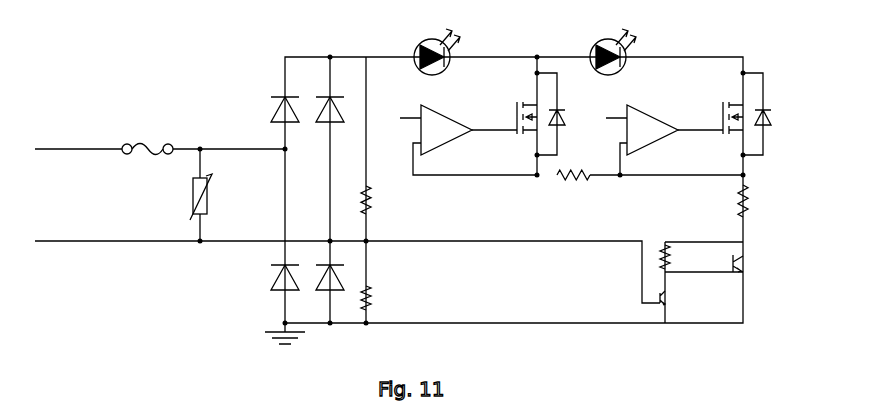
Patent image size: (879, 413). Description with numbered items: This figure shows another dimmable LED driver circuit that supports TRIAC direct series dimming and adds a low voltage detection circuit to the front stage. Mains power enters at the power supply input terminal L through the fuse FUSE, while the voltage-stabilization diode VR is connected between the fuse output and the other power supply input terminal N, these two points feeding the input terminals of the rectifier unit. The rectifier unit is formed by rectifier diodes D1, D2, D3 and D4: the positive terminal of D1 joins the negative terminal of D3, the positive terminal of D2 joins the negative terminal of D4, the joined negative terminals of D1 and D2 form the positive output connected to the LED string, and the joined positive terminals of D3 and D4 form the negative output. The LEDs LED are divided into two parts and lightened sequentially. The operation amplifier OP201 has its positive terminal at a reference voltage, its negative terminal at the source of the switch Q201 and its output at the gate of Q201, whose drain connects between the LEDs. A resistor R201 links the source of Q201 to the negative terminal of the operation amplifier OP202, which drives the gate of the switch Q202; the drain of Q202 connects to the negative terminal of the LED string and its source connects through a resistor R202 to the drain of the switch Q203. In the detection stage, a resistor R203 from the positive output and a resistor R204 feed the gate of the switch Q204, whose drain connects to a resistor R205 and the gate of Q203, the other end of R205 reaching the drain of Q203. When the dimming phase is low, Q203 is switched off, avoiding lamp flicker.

The power supply input terminal L is at (149, 149).
The power supply input terminal N is at (337, 268).
The fuse FUSE is at (147, 164).
The voltage-stabilization diode VR is at (214, 195).
The rectifier diode D1 is at (276, 103).
The rectifier diode D2 is at (324, 103).
The rectifier diode D3 is at (274, 270).
The rectifier diode D4 is at (322, 270).
The resistor R201 is at (572, 185).
The resistor R202 is at (765, 201).
The resistor R203 is at (386, 200).
The resistor R204 is at (386, 298).
The resistor R205 is at (701, 282).
The LED string LED is at (525, 64).
The operation amplifier OP201 is at (459, 138).
The operation amplifier OP202 is at (666, 140).
The switch Q201 is at (514, 114).
The switch Q202 is at (719, 114).
The switch Q203 is at (760, 264).
The switch Q204 is at (684, 297).